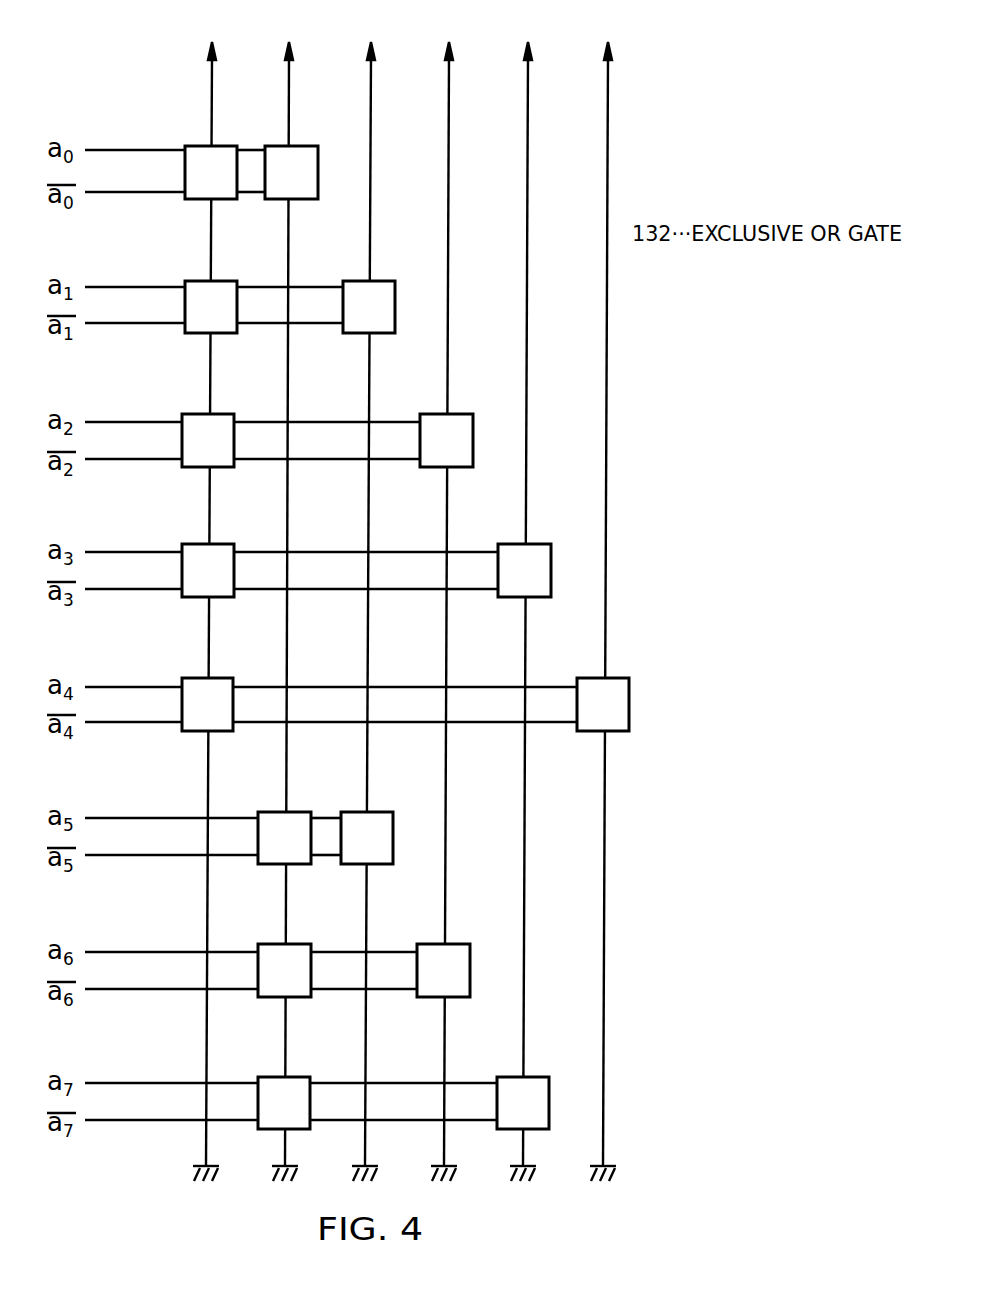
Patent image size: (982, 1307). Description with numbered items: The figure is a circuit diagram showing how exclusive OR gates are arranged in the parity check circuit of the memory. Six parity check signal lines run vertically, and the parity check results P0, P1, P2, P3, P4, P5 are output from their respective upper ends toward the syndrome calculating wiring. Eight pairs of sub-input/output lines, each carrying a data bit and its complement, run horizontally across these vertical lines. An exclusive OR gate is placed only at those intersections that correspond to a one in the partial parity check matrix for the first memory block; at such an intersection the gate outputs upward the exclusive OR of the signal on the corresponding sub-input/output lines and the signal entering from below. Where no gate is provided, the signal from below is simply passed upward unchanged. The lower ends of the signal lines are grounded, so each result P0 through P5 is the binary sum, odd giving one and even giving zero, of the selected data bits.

The parity check result p0 P0 is at (211, 595).
The parity check result p1 P1 is at (289, 595).
The parity check result p2 P2 is at (370, 595).
The parity check result p3 P3 is at (448, 595).
The parity check result p4 P4 is at (527, 595).
The parity check result p5 P5 is at (607, 595).